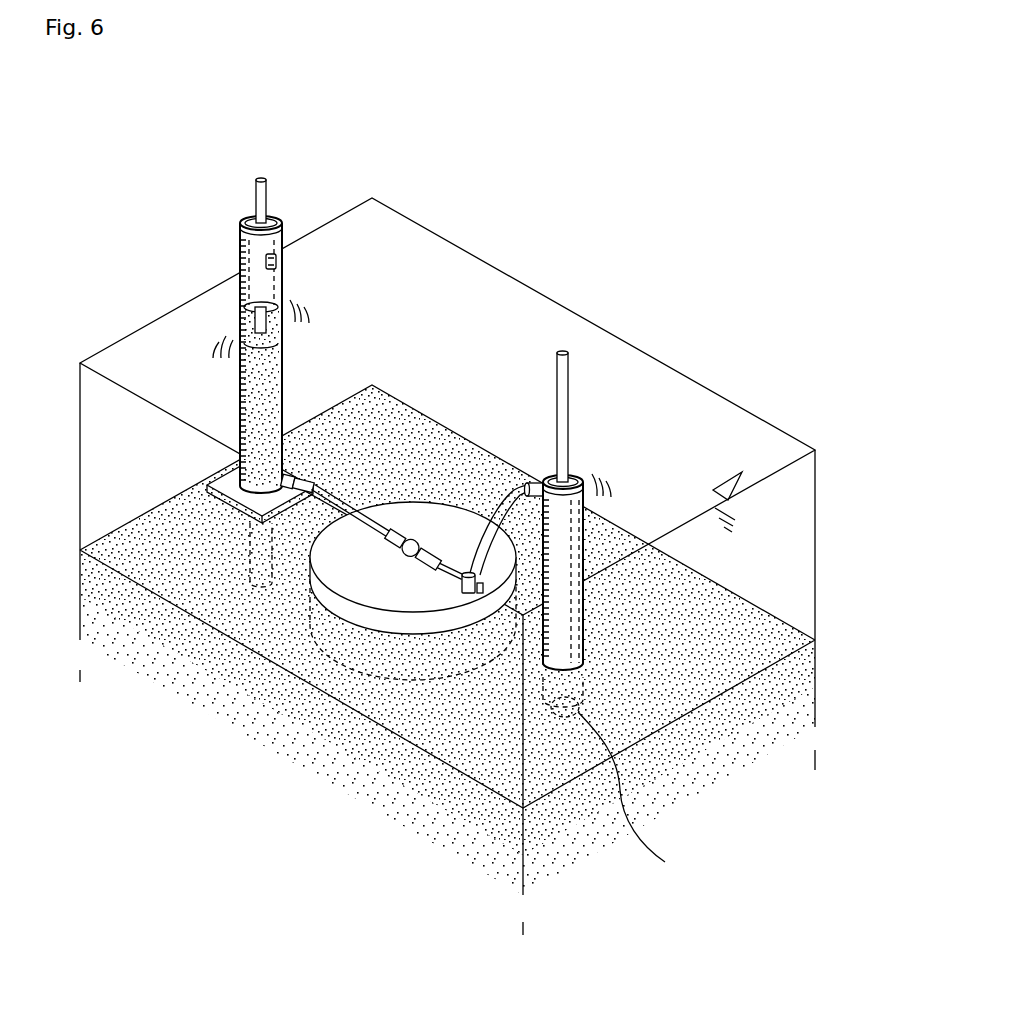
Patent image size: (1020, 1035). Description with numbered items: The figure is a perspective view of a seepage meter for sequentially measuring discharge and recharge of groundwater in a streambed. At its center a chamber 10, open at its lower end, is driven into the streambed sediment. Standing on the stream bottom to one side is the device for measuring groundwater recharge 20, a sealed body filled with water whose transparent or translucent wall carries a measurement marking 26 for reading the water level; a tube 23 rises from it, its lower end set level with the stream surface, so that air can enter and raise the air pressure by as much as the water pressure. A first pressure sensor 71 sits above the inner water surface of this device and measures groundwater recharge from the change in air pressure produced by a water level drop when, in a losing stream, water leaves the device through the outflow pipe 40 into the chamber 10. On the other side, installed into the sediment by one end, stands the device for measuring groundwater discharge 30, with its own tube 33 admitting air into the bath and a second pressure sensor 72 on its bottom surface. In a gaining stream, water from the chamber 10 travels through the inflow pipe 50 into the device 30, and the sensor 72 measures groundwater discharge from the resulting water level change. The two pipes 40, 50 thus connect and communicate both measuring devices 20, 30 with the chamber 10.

The chamber 10 is at (350, 621).
The device for measuring groundwater recharge 20 is at (281, 206).
The tube 23 is at (259, 207).
The measurement marking 26 is at (241, 268).
The device for measuring groundwater discharge 30 is at (590, 455).
The tube 33 is at (568, 388).
The outflow pipe 40 is at (340, 492).
The inflow pipe 50 is at (457, 550).
The first pressure sensor 71 is at (278, 262).
The second pressure sensor 72 is at (623, 791).